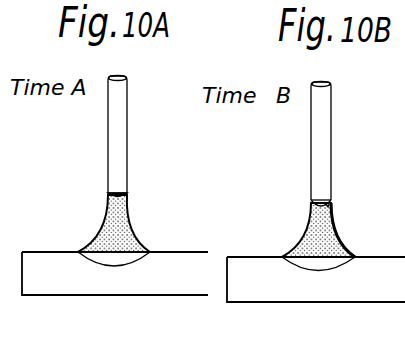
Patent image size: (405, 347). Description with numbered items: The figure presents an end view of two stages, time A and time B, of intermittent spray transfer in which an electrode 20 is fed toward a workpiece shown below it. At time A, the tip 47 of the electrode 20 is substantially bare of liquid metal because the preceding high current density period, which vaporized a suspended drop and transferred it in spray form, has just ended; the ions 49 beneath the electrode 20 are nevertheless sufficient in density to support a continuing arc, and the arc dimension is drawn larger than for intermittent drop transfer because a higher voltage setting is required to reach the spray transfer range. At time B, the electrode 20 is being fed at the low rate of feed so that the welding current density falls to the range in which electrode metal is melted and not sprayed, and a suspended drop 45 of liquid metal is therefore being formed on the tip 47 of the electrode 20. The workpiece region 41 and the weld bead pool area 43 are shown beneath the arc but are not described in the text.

In FIG. 10A, the electrode 20 is at (122, 118).
In FIG. 10B, the electrode 20 is at (324, 137).
In FIG. 10A, the plate 41 is at (46, 288).
In FIG. 10B, the plate 41 is at (258, 296).
In FIG. 10A, the weld penetration zone 43 is at (119, 264).
In FIG. 10B, the weld penetration zone 43 is at (328, 270).
In FIG. 10B, the suspended drop 45 is at (332, 205).
In FIG. 10A, the tip 47 is at (114, 191).
In FIG. 10B, the tip 47 is at (316, 200).
In FIG. 10A, the ions 49 is at (103, 222).
In FIG. 10B, the ions 49 is at (305, 232).